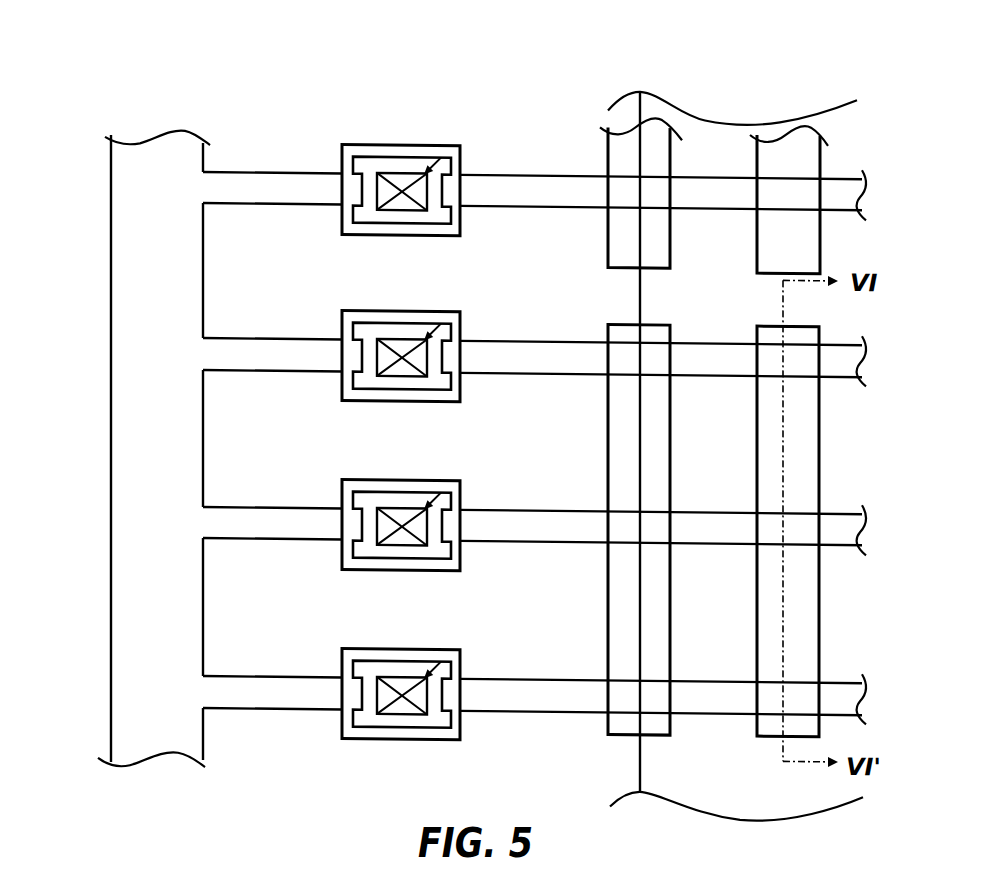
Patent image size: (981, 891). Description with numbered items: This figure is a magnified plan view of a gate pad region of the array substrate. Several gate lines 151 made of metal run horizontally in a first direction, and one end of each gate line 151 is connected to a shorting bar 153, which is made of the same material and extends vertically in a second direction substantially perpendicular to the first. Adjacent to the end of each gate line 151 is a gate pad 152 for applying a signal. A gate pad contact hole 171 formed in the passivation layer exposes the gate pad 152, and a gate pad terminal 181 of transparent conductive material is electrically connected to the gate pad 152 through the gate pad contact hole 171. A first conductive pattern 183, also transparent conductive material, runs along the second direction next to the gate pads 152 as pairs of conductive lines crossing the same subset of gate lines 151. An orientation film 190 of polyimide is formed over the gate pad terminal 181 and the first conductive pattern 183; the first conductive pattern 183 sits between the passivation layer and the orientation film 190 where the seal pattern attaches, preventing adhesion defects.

The gate line 151 is at (540, 172).
The gate pad 152 is at (367, 155).
The shorting bar 153 is at (111, 354).
The gate pad contact hole 171 is at (443, 154).
The gate pad terminal 181 is at (397, 143).
The first conductive pattern 183 is at (670, 238).
The orientation film 190 is at (705, 129).